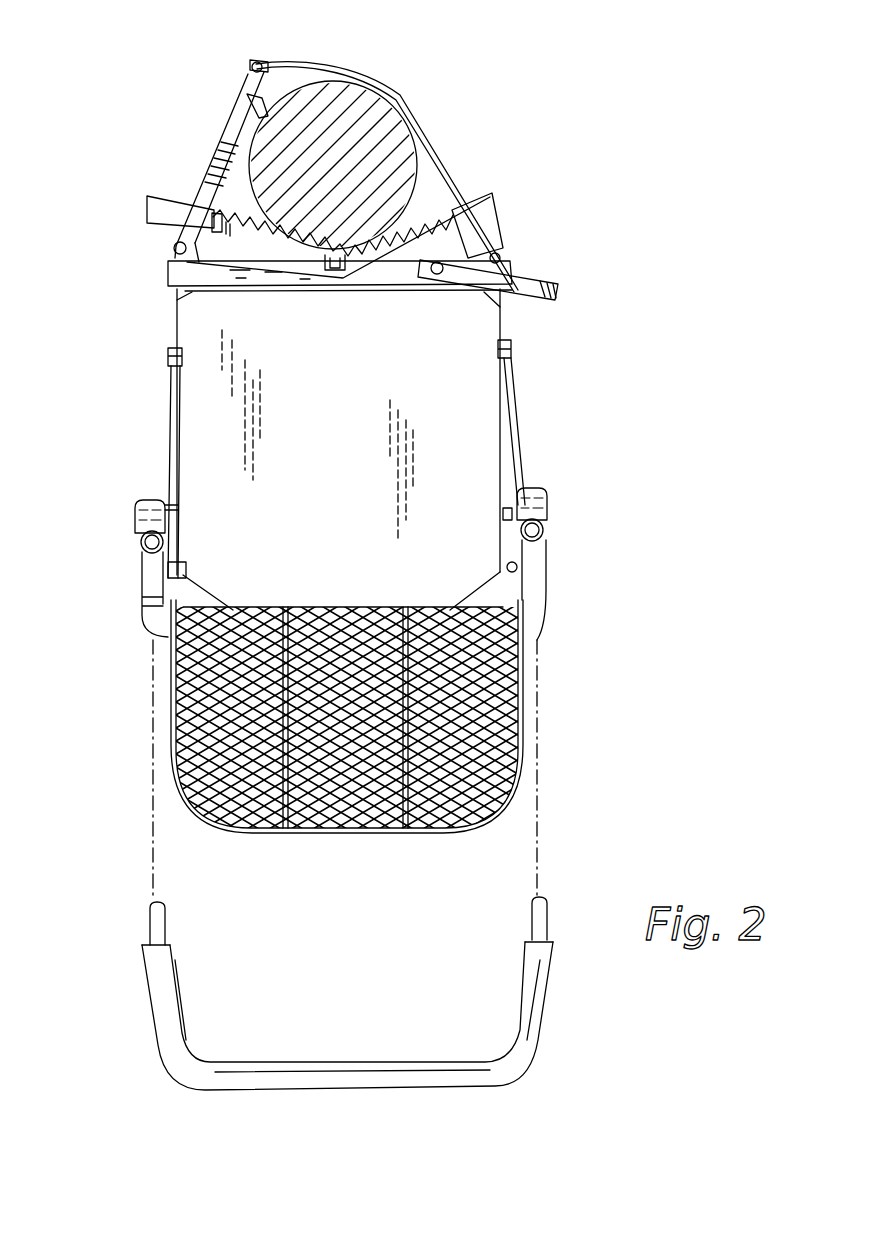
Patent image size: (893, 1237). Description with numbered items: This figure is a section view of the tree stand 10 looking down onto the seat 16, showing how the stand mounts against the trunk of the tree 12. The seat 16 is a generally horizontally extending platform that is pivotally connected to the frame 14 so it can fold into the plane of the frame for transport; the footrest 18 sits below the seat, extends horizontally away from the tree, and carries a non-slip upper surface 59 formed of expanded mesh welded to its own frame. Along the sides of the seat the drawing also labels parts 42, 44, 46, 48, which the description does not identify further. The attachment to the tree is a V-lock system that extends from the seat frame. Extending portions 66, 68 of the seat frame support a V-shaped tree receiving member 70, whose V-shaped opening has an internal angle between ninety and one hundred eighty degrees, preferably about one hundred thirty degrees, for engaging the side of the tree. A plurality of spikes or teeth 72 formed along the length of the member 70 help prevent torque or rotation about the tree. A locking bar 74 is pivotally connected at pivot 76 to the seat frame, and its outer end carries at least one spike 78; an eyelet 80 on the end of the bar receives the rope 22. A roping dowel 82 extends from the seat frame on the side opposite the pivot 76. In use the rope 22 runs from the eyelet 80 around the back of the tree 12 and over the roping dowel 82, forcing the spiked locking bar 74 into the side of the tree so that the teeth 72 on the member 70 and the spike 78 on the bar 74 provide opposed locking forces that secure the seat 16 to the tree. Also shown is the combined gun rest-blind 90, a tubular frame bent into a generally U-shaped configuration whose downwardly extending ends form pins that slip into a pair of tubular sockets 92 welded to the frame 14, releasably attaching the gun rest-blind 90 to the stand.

The tree stand 10 is at (610, 132).
The tree 12 is at (385, 130).
The frame 14 is at (136, 522).
The seat 16 is at (346, 366).
The footrest 18 is at (198, 807).
The rope 22 is at (327, 78).
The right clamp 42 is at (508, 350).
The left clamp 44 is at (166, 360).
The right support rod 46 is at (514, 438).
The left support rod 48 is at (170, 425).
The upper surface 59 is at (196, 710).
The extending portion 66 is at (502, 232).
The extending portion 68 is at (170, 233).
The V-shaped tree receiving member 70 is at (147, 205).
The teeth 72 is at (205, 176).
The locking bar 74 is at (214, 124).
The pivot 76 is at (176, 250).
The spike 78 is at (246, 96).
The eyelet 80 is at (254, 62).
The roping dowel 82 is at (546, 285).
The gun rest-blind 90 is at (548, 1046).
The tubular sockets 92 is at (145, 545).